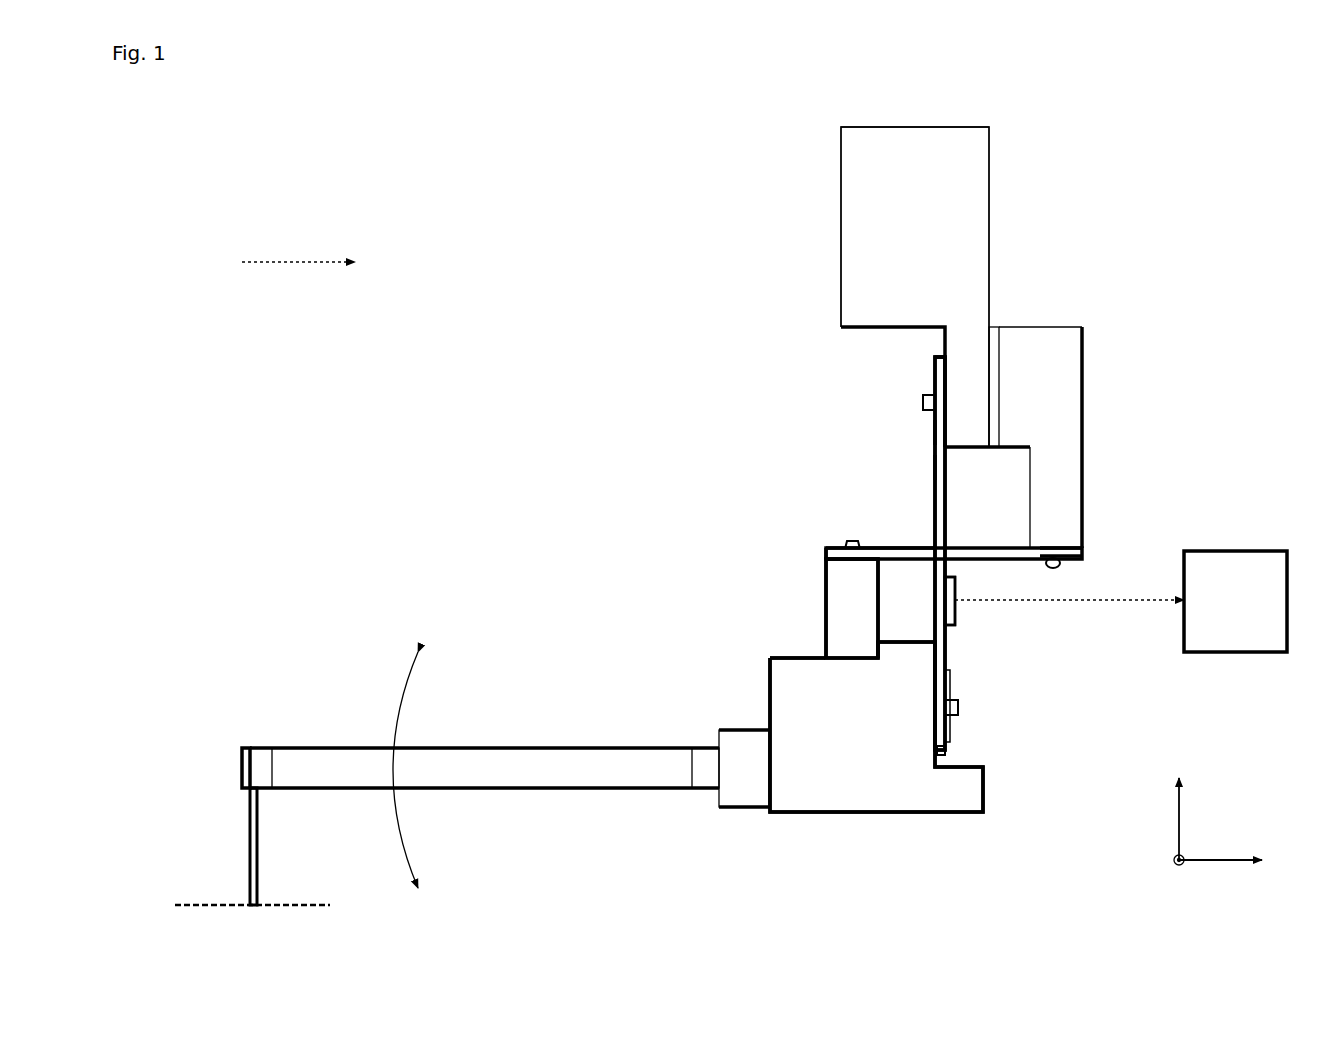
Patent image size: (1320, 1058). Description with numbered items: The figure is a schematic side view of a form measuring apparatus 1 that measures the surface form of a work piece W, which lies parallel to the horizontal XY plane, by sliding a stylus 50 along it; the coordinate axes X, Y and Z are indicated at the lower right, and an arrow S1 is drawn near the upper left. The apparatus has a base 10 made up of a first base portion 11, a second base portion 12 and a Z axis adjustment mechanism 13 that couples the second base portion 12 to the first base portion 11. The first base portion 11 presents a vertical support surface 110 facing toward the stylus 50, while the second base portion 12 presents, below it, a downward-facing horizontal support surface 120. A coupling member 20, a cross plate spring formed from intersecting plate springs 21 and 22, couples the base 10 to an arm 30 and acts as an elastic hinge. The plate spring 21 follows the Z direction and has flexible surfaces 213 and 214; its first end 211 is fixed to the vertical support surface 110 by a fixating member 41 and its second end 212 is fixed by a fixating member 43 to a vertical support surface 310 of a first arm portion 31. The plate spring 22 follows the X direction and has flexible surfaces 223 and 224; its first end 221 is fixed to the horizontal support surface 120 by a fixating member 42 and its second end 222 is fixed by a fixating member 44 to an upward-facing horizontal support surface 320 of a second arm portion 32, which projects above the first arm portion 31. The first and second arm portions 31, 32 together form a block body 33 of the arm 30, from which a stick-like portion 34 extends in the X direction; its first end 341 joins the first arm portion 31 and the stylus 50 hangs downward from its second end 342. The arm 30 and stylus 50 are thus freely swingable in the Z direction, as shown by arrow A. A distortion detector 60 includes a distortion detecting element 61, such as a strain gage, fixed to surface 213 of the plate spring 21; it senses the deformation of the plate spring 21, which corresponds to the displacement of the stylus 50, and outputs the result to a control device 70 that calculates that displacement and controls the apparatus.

The form measuring apparatus 1 is at (1150, 156).
The base 10 is at (797, 230).
The first base portion 11 is at (843, 284).
The second base portion 12 is at (1083, 382).
The Z axis adjustment mechanism 13 is at (997, 330).
The vertical support surface 110 is at (938, 432).
The horizontal support surface 120 is at (1070, 560).
The coupling member 20 is at (765, 434).
The plate spring 21 is at (936, 500).
The first end 211 is at (936, 362).
The second end 212 is at (947, 754).
The surface 213 is at (946, 468).
The surface 214 is at (937, 468).
The plate spring 22 is at (985, 545).
The first end 221 is at (1072, 546).
The second end 222 is at (845, 548).
The surface 223 is at (900, 548).
The surface 224 is at (912, 560).
The arm 30 is at (570, 576).
The first arm portion 31 is at (890, 814).
The vertical support surface 310 is at (955, 742).
The second arm portion 32 is at (830, 620).
The horizontal support surface 320 is at (828, 552).
The block body 33 is at (740, 612).
The stick-like portion 34 is at (510, 748).
The first end 341 is at (700, 746).
The second end 342 is at (262, 748).
The fixating member 41 is at (926, 398).
The fixating member 42 is at (1058, 566).
The fixating member 43 is at (960, 706).
The fixating member 44 is at (852, 540).
The stylus 50 is at (250, 848).
The distortion detector 60 is at (988, 630).
The distortion detecting element 61 is at (956, 590).
The control device 70 is at (1240, 550).
The arrow A is at (392, 690).
The moving direction S1 is at (298, 245).
The work piece W is at (318, 902).
The X direction X is at (1231, 861).
The Y direction Y is at (1166, 861).
The Z direction Z is at (1179, 803).